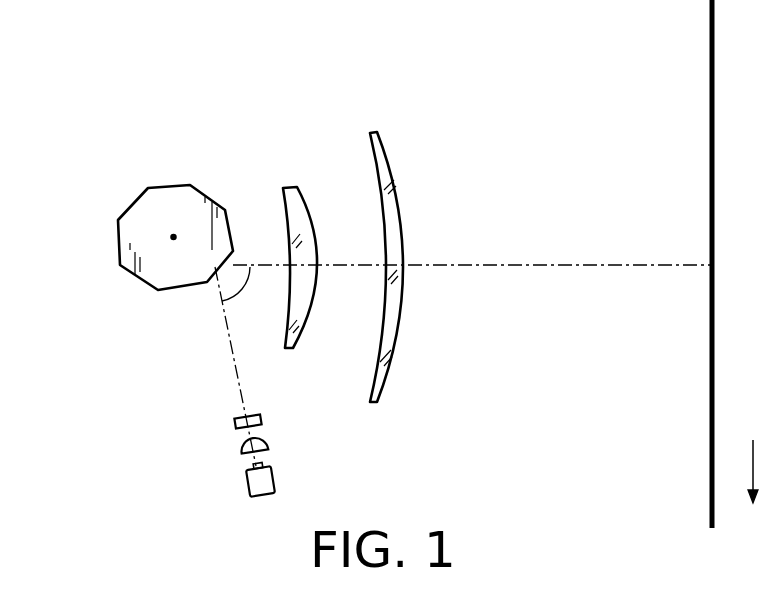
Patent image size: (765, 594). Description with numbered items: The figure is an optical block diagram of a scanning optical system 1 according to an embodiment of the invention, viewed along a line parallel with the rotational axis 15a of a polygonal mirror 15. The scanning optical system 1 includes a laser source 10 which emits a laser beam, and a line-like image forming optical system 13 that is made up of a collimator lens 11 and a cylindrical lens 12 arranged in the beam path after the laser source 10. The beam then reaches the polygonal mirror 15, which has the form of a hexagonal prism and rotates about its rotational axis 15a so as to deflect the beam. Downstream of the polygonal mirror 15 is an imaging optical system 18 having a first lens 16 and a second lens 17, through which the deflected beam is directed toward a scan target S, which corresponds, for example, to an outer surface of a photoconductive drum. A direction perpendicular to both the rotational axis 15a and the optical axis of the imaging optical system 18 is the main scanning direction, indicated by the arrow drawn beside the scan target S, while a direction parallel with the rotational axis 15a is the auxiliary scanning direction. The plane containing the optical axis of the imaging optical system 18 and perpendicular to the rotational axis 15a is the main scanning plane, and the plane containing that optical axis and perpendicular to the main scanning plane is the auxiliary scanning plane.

The scanning optical system 1 is at (70, 84).
The laser source 10 is at (247, 474).
The collimator lens 11 is at (240, 449).
The cylindrical lens 12 is at (235, 421).
The line-like image forming optical system 13 is at (135, 397).
The polygonal mirror 15 is at (135, 275).
The rotational axis 15a is at (174, 237).
The first lens 16 is at (297, 189).
The second lens 17 is at (376, 133).
The imaging optical system 18 is at (405, 55).
The scan target S is at (710, 51).